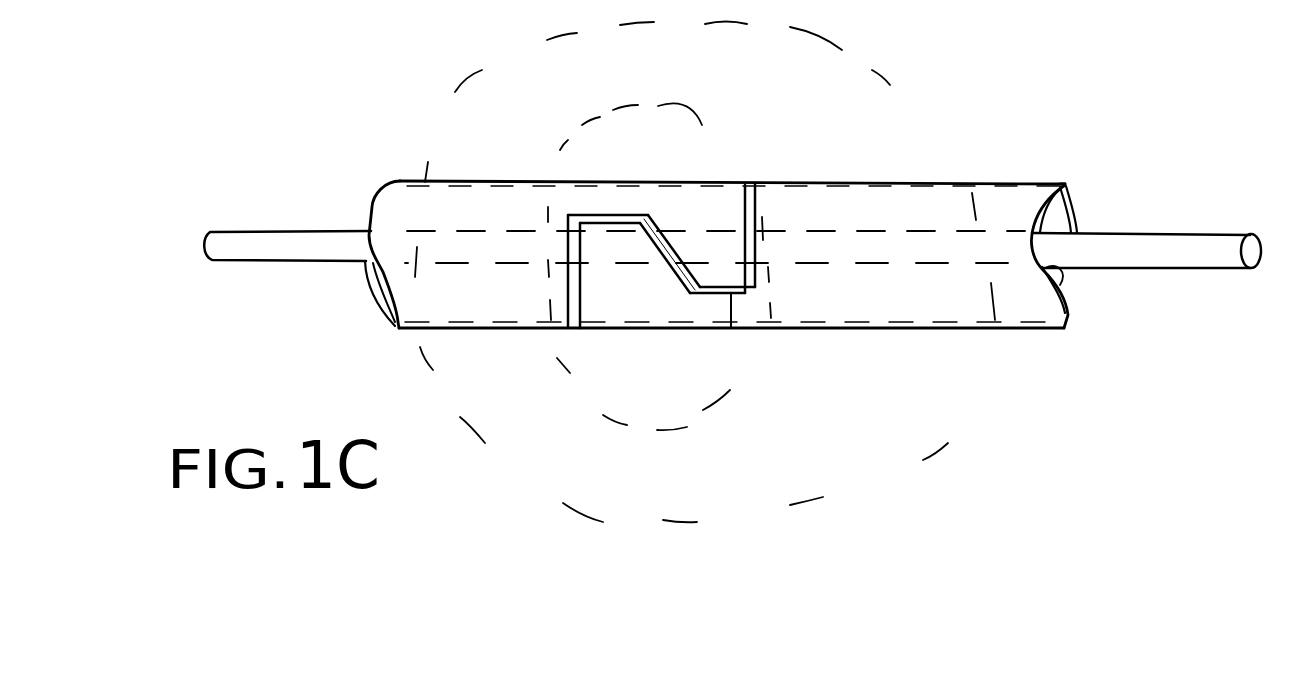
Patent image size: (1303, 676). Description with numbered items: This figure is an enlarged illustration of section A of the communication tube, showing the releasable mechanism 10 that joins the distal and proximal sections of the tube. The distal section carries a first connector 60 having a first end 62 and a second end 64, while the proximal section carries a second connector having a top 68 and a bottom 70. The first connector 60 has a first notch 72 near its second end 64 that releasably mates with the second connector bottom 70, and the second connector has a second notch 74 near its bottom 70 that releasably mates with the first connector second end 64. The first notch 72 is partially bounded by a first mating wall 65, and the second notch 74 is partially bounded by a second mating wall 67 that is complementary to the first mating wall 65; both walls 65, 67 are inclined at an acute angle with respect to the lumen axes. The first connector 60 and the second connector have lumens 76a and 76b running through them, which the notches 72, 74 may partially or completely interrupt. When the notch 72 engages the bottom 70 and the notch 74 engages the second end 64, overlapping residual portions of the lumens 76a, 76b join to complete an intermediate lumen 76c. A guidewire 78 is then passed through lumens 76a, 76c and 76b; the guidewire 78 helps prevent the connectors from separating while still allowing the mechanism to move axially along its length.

The device assembly 10 is at (947, 126).
The first connector 60 is at (377, 313).
The first end 62 is at (402, 182).
The second end 64 is at (715, 181).
The first mating wall 65 is at (690, 263).
The second mating wall 67 is at (655, 250).
The top 68 is at (1015, 183).
The bottom 70 is at (640, 330).
The first notch 72 is at (609, 215).
The second notch 74 is at (731, 328).
The lumen 76a is at (510, 298).
The lumen 76b is at (893, 298).
The intermediate lumen 76c is at (677, 393).
The guidewire 78 is at (230, 247).
The section A is at (987, 397).